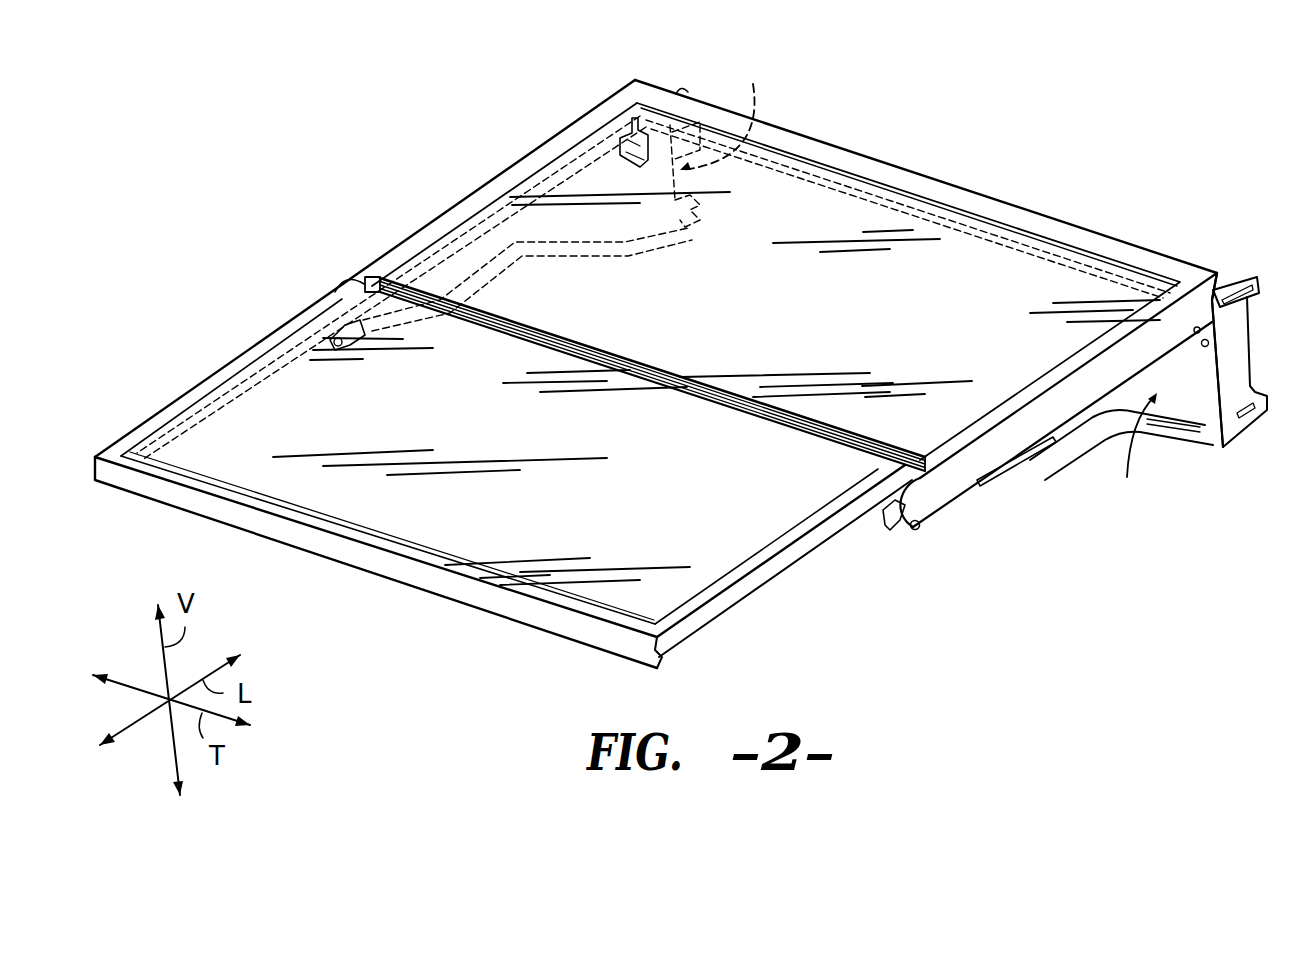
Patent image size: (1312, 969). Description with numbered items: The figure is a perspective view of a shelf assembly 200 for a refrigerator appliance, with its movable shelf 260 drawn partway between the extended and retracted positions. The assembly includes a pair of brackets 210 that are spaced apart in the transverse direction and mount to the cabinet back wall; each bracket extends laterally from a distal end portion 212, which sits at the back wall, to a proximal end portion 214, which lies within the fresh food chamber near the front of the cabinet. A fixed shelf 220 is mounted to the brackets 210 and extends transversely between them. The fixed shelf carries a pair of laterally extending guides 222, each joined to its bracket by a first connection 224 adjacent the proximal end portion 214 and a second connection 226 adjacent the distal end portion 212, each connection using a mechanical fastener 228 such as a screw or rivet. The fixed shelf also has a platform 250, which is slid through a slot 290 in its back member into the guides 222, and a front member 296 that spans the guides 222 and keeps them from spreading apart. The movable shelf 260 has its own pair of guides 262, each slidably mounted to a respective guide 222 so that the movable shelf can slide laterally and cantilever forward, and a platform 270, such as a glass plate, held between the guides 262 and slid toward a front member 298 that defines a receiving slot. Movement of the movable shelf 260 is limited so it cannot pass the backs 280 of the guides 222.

The shelf assembly 200 is at (256, 150).
The bracket 210 is at (919, 280).
The distal end portion 212 is at (1240, 277).
The proximal end portion 214 is at (913, 537).
The fixed shelf 220 is at (800, 205).
The guide 222 is at (450, 215).
The first connection 224 is at (922, 548).
The second connection 226 is at (1193, 360).
The mechanical fastener 228 is at (1227, 340).
The platform 250 is at (568, 277).
The movable shelf 260 is at (168, 386).
The guide 262 is at (255, 355).
The platform 270 is at (420, 513).
The back 280 is at (1219, 290).
The slot 290 is at (970, 200).
The front member 296 is at (847, 447).
The front member 298 is at (470, 588).